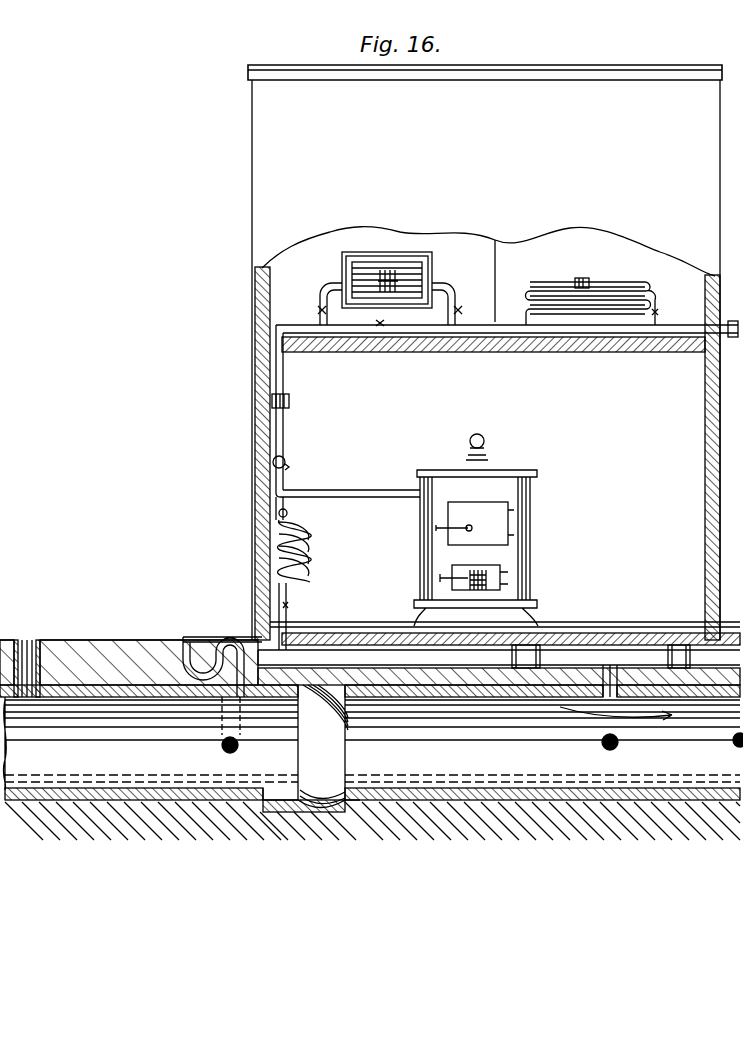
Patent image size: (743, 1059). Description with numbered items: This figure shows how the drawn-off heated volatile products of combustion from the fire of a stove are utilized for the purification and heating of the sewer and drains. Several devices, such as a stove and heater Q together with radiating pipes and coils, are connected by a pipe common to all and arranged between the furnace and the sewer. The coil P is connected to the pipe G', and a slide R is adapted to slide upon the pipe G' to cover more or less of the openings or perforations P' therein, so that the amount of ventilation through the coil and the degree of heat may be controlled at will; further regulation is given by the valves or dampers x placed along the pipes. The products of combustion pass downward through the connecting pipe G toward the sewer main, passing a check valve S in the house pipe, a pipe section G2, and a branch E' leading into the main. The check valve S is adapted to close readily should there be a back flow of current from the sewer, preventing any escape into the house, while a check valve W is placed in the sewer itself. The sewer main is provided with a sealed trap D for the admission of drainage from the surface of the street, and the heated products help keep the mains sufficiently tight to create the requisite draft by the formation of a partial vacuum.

The slatted valve or damper Q is at (392, 262).
The valve or damper x is at (318, 310).
The slide R is at (585, 272).
The ventilating-openings P is at (591, 290).
The pipe G' is at (507, 413).
The openings or perforations P' is at (293, 515).
The sealed trap D is at (208, 686).
The check-valve W is at (317, 746).
The connecting-pipe G is at (499, 644).
The check-valve S is at (526, 656).
The pipe section G2 is at (673, 656).
The branch pipe E' is at (622, 681).